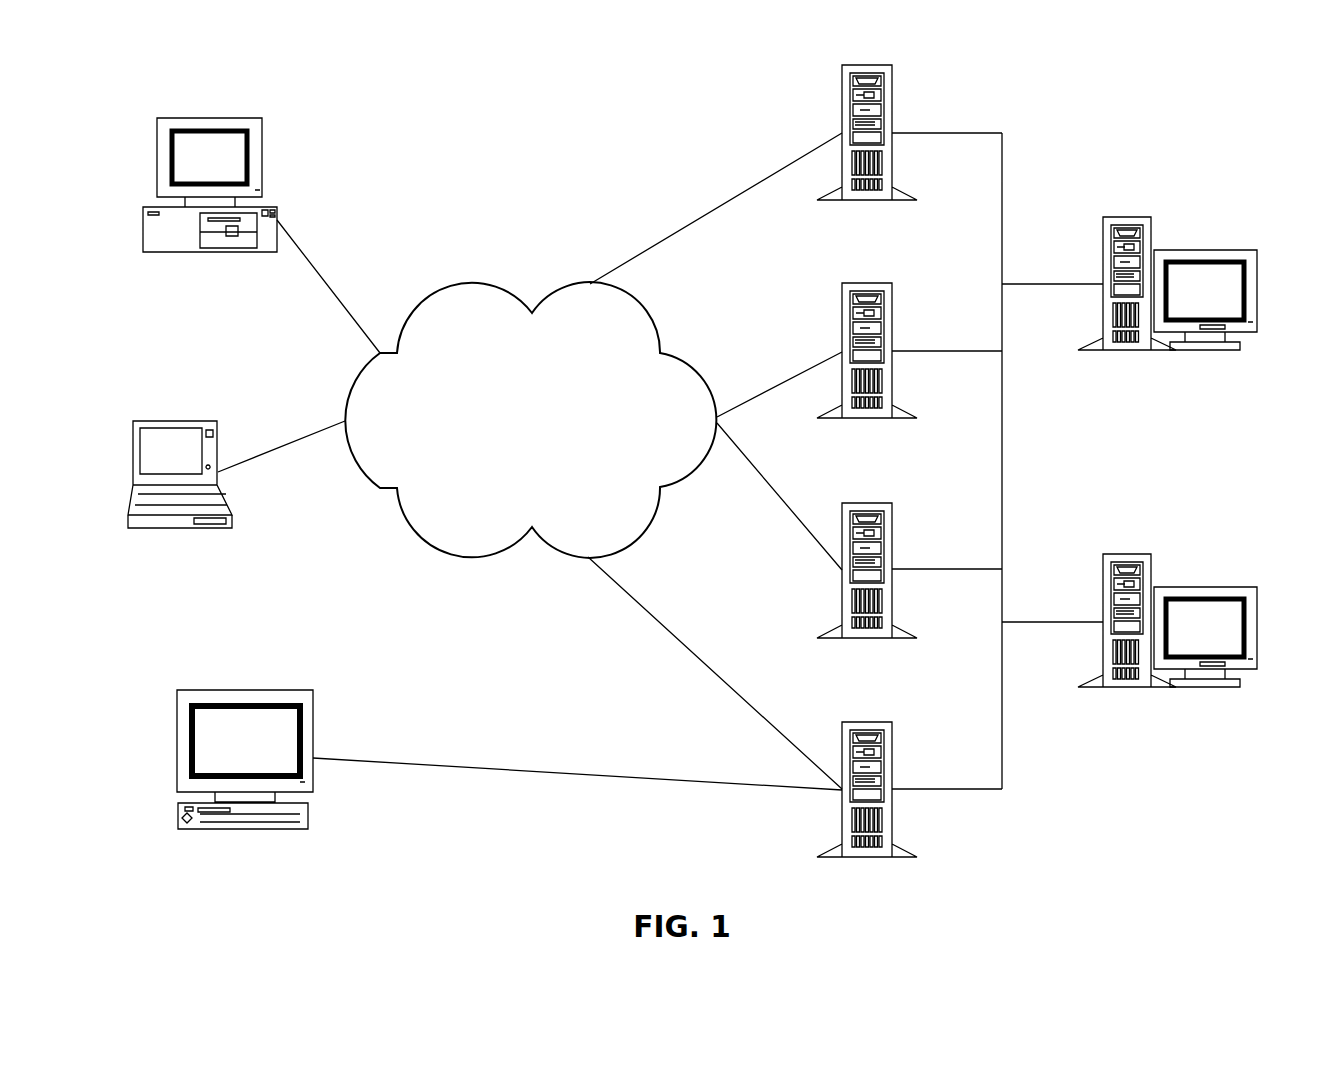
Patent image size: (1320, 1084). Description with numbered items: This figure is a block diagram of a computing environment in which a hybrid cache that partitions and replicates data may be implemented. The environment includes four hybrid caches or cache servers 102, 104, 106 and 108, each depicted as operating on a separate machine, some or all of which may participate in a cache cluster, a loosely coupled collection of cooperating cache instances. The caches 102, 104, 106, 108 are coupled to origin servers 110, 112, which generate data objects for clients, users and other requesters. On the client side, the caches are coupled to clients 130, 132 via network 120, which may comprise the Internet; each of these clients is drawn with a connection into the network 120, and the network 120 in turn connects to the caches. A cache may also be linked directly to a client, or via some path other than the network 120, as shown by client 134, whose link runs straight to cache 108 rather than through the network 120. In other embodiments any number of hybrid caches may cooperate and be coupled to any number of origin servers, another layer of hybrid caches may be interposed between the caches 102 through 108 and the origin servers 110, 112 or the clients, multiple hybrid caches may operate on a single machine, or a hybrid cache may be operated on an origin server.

The hybrid cache 102 is at (867, 157).
The hybrid cache 104 is at (867, 376).
The hybrid cache 106 is at (867, 595).
The hybrid cache 108 is at (867, 814).
The origin server 110 is at (1167, 309).
The origin server 112 is at (1167, 645).
The network 120 is at (530, 420).
The client 130 is at (210, 199).
The client 132 is at (180, 485).
The client 134 is at (245, 770).